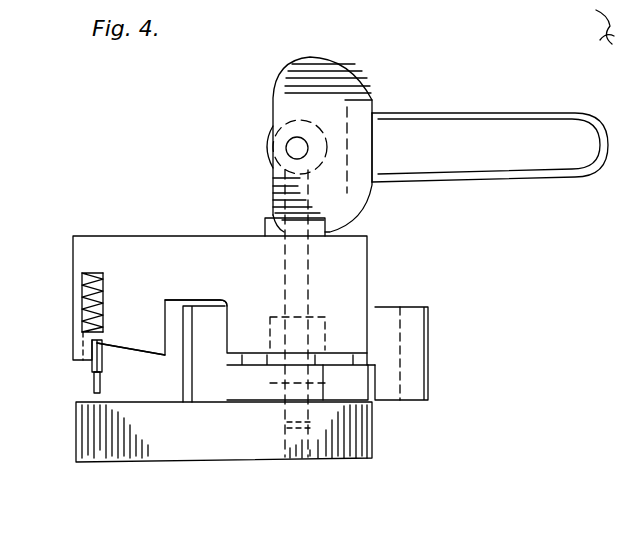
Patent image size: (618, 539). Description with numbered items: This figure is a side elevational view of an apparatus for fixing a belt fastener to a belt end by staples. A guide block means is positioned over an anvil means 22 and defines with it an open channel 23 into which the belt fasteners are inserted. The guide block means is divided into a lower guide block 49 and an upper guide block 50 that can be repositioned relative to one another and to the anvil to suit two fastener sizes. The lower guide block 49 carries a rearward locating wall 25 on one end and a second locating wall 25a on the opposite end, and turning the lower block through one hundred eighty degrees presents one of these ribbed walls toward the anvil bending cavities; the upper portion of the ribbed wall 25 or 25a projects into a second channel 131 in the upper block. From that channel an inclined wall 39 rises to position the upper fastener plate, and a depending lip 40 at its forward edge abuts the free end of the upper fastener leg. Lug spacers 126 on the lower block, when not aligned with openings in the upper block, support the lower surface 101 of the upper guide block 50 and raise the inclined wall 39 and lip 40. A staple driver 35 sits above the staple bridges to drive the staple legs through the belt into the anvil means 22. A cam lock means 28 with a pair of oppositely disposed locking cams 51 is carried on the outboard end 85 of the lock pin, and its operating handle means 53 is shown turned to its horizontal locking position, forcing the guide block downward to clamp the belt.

The anvil means 22 is at (235, 447).
The open channel 23 is at (154, 398).
The rearward locating wall 25 is at (392, 292).
The locating wall 25a is at (206, 380).
The cam lock means 28 is at (372, 92).
The staple driver 35 is at (114, 363).
The inclined wall 39 is at (128, 346).
The depending lip 40 is at (74, 361).
The lower guide block 49 is at (362, 390).
The upper guide block 50 is at (162, 248).
The locking cams 51 is at (297, 63).
The operating handle means 53 is at (470, 80).
The outboard end 85 is at (256, 138).
The lower surface 101 is at (345, 403).
The lug spacers 126 is at (247, 356).
The second channel 131 is at (173, 310).